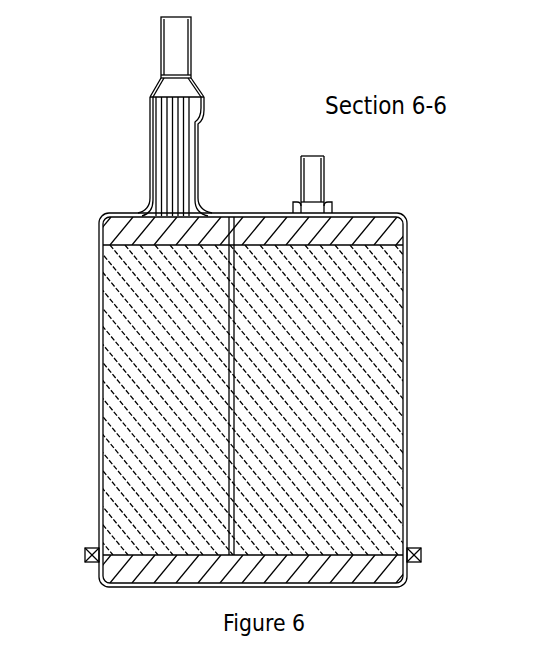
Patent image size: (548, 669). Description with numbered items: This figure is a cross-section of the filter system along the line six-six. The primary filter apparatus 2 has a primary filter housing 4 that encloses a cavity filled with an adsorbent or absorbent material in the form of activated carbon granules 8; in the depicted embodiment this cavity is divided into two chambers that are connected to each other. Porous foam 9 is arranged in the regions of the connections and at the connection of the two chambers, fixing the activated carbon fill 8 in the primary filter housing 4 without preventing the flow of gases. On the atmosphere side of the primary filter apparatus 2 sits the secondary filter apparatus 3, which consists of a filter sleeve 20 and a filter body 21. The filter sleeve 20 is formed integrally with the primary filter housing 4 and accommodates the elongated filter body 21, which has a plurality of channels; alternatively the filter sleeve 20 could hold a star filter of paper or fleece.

The primary filter apparatus 2 is at (97, 364).
The secondary filter apparatus 3 is at (148, 131).
The primary filter housing 4 is at (100, 252).
The activated carbon granules 8 is at (187, 372).
The porous foam 9 is at (385, 234).
The filter sleeve 20 is at (150, 162).
The filter body 21 is at (192, 155).